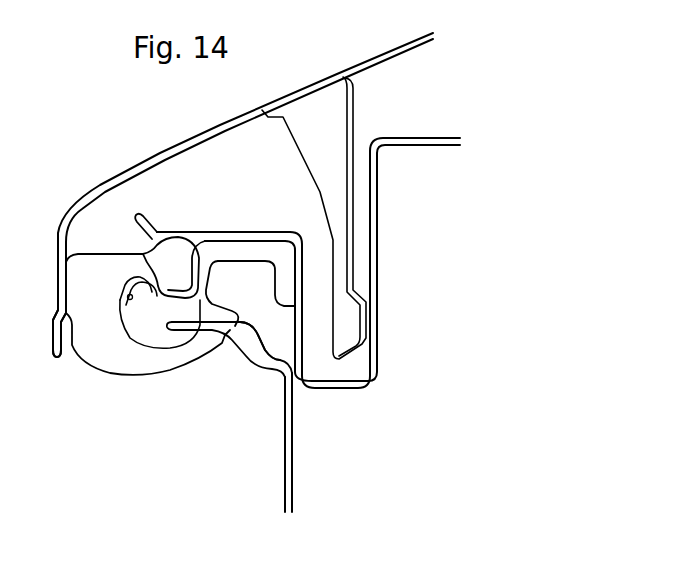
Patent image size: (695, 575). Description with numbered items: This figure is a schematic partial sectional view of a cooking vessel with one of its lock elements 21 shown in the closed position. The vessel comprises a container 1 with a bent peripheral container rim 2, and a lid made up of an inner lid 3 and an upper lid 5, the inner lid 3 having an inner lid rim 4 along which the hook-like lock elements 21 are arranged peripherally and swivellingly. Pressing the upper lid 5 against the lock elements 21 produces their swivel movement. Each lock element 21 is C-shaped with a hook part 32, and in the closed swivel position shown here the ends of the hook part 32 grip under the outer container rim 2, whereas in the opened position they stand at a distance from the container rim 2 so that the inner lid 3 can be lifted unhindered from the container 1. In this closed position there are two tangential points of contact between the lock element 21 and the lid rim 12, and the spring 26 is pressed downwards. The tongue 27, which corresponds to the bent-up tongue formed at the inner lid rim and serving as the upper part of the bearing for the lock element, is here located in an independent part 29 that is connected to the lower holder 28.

The container 1 is at (283, 490).
The container rim 2 is at (251, 357).
The inner lid 3 is at (378, 258).
The inner lid rim 4 is at (222, 232).
The upper lid 5 is at (393, 39).
The lid rim 12 is at (51, 334).
The lock element 21 is at (142, 377).
The spring 26 is at (121, 310).
The tongue 27 is at (141, 212).
The lower holder 28 is at (192, 240).
The independent part 29 is at (258, 233).
The hook part 32 is at (177, 357).